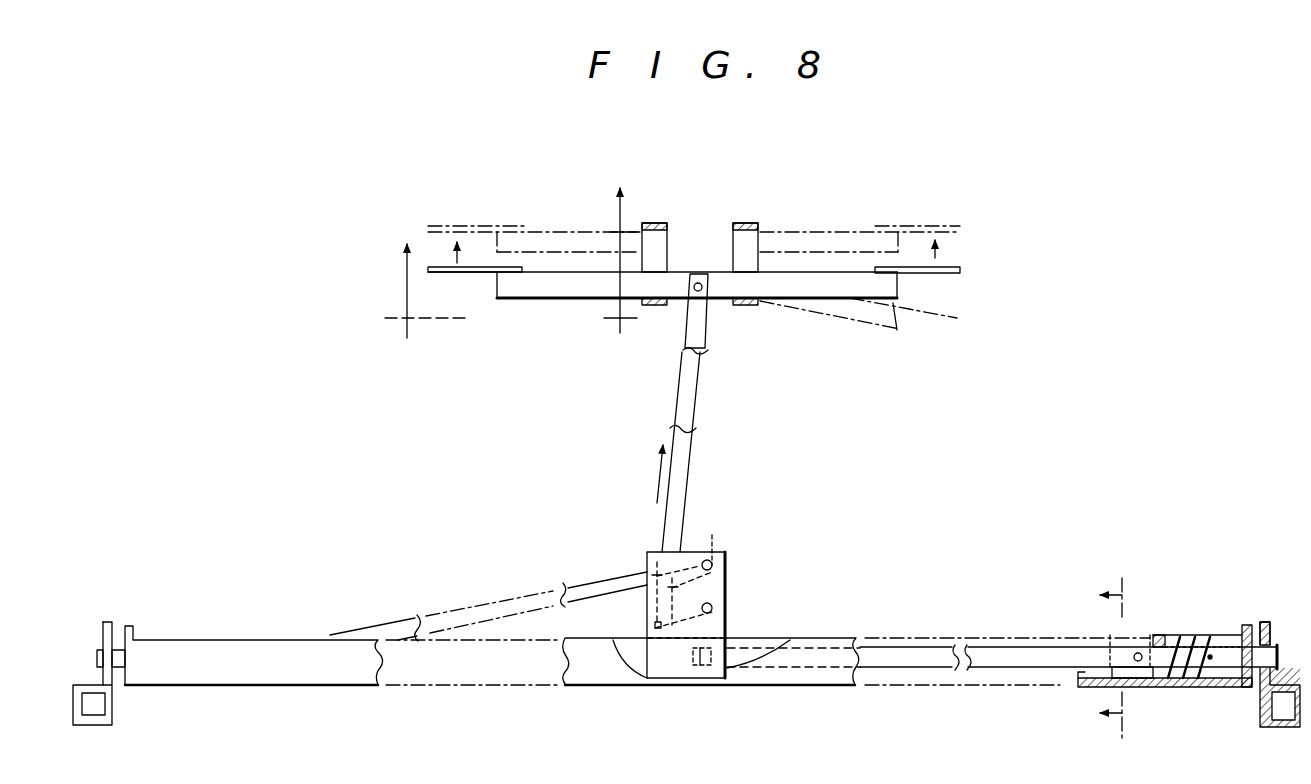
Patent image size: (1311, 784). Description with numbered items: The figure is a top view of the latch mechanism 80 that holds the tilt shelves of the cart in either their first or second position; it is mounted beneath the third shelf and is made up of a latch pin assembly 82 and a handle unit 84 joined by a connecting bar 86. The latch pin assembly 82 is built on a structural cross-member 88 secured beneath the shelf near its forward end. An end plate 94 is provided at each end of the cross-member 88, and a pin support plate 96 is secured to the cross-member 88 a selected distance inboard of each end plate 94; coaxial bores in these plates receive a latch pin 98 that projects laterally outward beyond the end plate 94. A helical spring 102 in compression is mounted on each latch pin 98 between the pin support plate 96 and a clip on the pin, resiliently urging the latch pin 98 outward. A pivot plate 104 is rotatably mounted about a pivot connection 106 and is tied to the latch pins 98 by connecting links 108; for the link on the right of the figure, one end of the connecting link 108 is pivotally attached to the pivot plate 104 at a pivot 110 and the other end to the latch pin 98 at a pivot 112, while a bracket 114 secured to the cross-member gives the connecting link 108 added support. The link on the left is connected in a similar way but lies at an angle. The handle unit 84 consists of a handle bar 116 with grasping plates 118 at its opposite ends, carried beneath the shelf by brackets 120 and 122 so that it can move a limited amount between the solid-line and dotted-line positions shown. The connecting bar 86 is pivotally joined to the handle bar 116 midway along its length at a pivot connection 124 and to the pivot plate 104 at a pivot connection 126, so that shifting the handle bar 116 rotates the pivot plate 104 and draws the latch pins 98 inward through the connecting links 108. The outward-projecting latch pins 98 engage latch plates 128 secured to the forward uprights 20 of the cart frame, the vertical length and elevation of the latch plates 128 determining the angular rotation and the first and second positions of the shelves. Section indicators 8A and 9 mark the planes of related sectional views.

The section line 8A- 8A is at (512, 265).
The section line 9- 9 is at (1088, 659).
The forward upright 20 is at (1273, 727).
The latch mechanism 80 is at (1082, 298).
The latch pin assembly 82 is at (1062, 518).
The handle unit 84 is at (665, 317).
The connecting bar 86 is at (688, 455).
The structural cross-member 88 is at (830, 632).
The end plate 94 is at (132, 630).
The pin support plate 96 is at (1147, 636).
The latch pin 98 is at (1236, 658).
The helical spring 102 is at (1188, 628).
The pivot plate 104 is at (727, 566).
The pivot connection 106 is at (712, 604).
The connecting link 108 is at (990, 653).
The pivot 110 is at (713, 548).
The pivot 112 is at (1155, 688).
The bracket 114 is at (1078, 673).
The handle bar 116 is at (553, 283).
The grasping plate 118 is at (477, 273).
The bracket 120 is at (643, 222).
The bracket 122 is at (758, 223).
The pivot connection 124 is at (702, 278).
The pivot connection 126 is at (655, 626).
The latch plate 128 is at (110, 620).